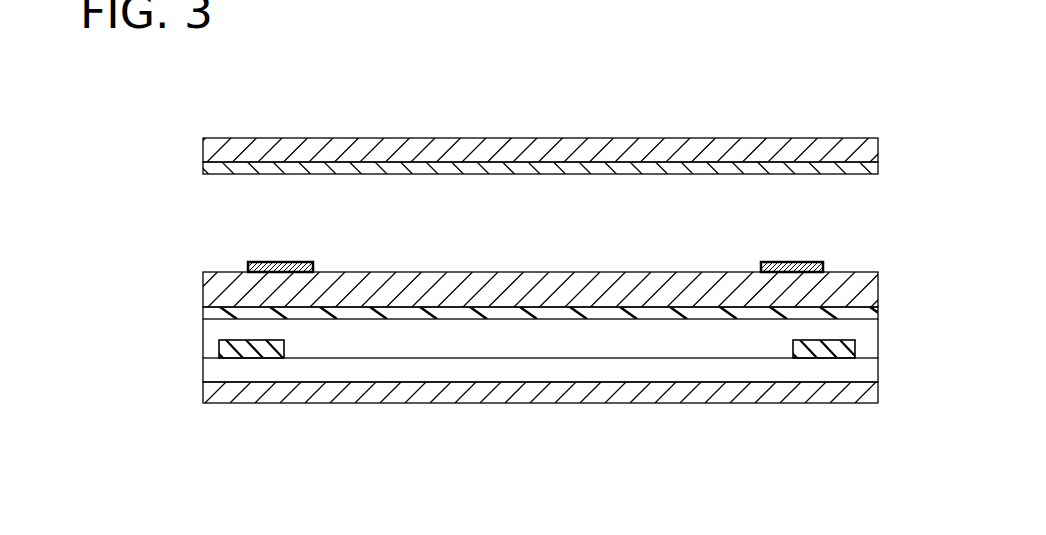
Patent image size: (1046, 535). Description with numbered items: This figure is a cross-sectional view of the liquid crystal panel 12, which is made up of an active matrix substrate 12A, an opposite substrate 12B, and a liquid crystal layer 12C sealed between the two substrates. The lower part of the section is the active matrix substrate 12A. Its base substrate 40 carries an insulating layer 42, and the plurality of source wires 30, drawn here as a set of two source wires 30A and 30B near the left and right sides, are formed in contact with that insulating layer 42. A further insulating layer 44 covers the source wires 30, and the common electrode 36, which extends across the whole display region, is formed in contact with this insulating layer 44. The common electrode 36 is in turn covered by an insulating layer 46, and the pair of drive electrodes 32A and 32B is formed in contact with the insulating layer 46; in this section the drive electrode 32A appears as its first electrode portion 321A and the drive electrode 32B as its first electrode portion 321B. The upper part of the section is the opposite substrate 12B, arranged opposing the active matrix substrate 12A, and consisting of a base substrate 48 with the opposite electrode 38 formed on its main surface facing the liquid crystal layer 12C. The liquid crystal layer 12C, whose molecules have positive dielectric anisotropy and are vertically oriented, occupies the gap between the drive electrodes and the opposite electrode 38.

The liquid crystal panel 12 is at (234, 131).
The active matrix substrate 12A is at (883, 272).
The opposite substrate 12B is at (883, 138).
The liquid crystal layer 12C is at (883, 175).
The source wires 30 is at (254, 348).
The source wire 30A is at (245, 349).
The source wire 30B is at (818, 349).
The drive electrode 32A is at (281, 262).
The drive electrode 32B is at (793, 262).
The first electrode portion 321A is at (280, 267).
The first electrode portion 321B is at (792, 267).
The common electrode 36 is at (497, 312).
The opposite electrode 38 is at (586, 166).
The base substrate 40 is at (223, 386).
The insulating layer 42 is at (527, 372).
The insulating layer 44 is at (614, 345).
The insulating layer 46 is at (550, 290).
The base substrate 48 is at (224, 144).